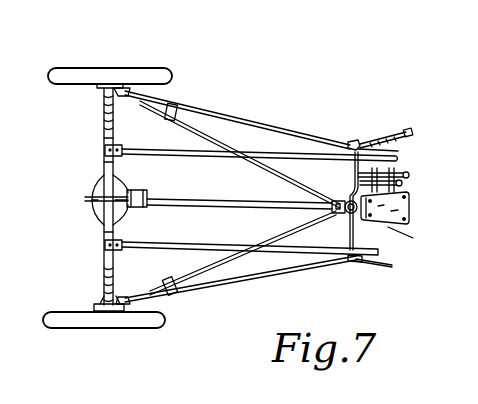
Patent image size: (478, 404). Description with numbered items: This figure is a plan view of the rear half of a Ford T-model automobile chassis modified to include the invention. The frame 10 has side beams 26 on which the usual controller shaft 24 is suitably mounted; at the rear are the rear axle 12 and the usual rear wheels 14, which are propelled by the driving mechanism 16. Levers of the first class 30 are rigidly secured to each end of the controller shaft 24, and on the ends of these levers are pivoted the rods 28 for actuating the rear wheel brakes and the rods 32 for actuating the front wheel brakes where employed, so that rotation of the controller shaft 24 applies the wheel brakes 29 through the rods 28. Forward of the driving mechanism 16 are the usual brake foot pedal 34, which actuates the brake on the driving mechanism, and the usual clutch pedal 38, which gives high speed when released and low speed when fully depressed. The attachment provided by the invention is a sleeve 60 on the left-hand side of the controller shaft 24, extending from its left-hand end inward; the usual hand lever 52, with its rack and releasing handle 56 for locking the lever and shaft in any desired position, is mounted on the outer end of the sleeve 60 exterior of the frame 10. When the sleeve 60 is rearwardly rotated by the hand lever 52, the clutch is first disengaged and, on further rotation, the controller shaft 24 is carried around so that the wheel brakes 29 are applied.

The frame 10 is at (291, 150).
The rear axle 12 is at (100, 154).
The rear wheels 14 is at (66, 68).
The driving mechanism 16 is at (402, 233).
The controller shaft 24 is at (352, 232).
The side beams 26 is at (411, 200).
The rods for actuating the rear wheel brakes 28 is at (244, 125).
The wheel brakes 29 is at (126, 88).
The levers of the first class 30 is at (354, 142).
The rods for actuating the front wheel brakes 32 is at (398, 152).
The brake foot pedal 34 is at (402, 184).
The clutch pedal 38 is at (409, 175).
The hand lever 52 is at (388, 140).
The releasing handle 56 is at (412, 131).
The sleeve 60 is at (354, 171).